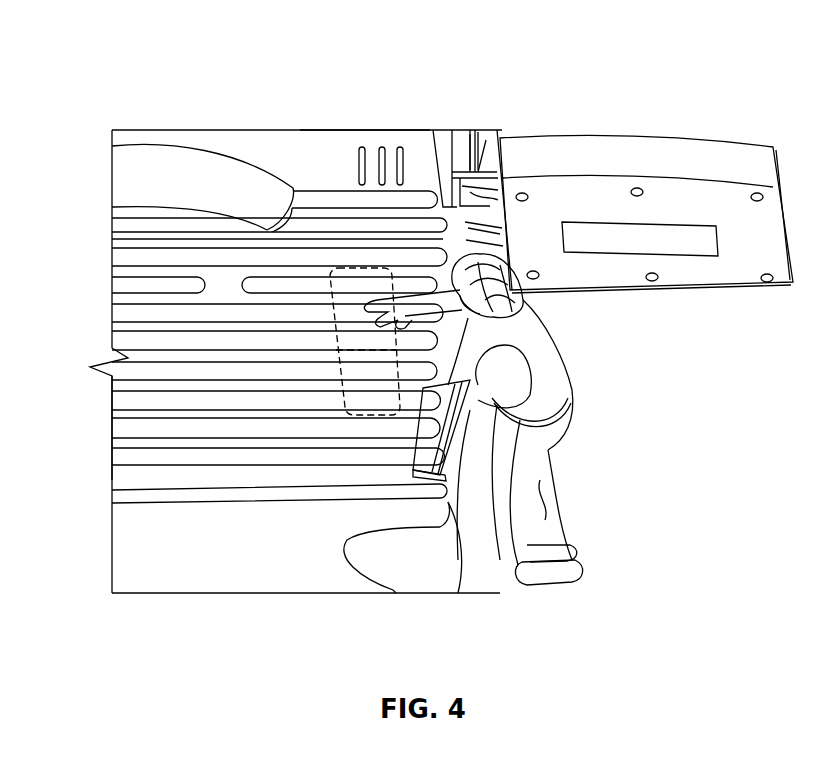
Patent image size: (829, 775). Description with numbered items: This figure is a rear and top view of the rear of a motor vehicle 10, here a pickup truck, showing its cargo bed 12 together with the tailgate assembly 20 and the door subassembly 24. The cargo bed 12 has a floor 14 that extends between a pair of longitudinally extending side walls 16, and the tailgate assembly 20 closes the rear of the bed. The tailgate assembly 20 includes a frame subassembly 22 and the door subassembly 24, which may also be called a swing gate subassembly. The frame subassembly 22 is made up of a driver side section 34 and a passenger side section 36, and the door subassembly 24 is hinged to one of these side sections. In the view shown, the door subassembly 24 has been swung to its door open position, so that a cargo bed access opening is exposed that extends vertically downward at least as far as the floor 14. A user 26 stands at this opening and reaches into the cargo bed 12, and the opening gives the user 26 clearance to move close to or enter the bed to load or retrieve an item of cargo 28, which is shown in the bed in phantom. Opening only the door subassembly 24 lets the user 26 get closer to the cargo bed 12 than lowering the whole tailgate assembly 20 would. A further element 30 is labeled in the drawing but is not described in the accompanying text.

The motor vehicle 10 is at (124, 66).
The cargo bed 12 is at (312, 230).
The floor 14 is at (122, 398).
The side walls 16 is at (355, 130).
The tailgate assembly 20 is at (485, 131).
The frame subassembly 22 is at (475, 144).
The door subassembly 24 is at (712, 155).
The user 26 is at (582, 398).
The item of cargo 28 is at (378, 285).
The opening 30 is at (479, 237).
The driver side section 34 is at (457, 483).
The passenger side section 36 is at (485, 165).